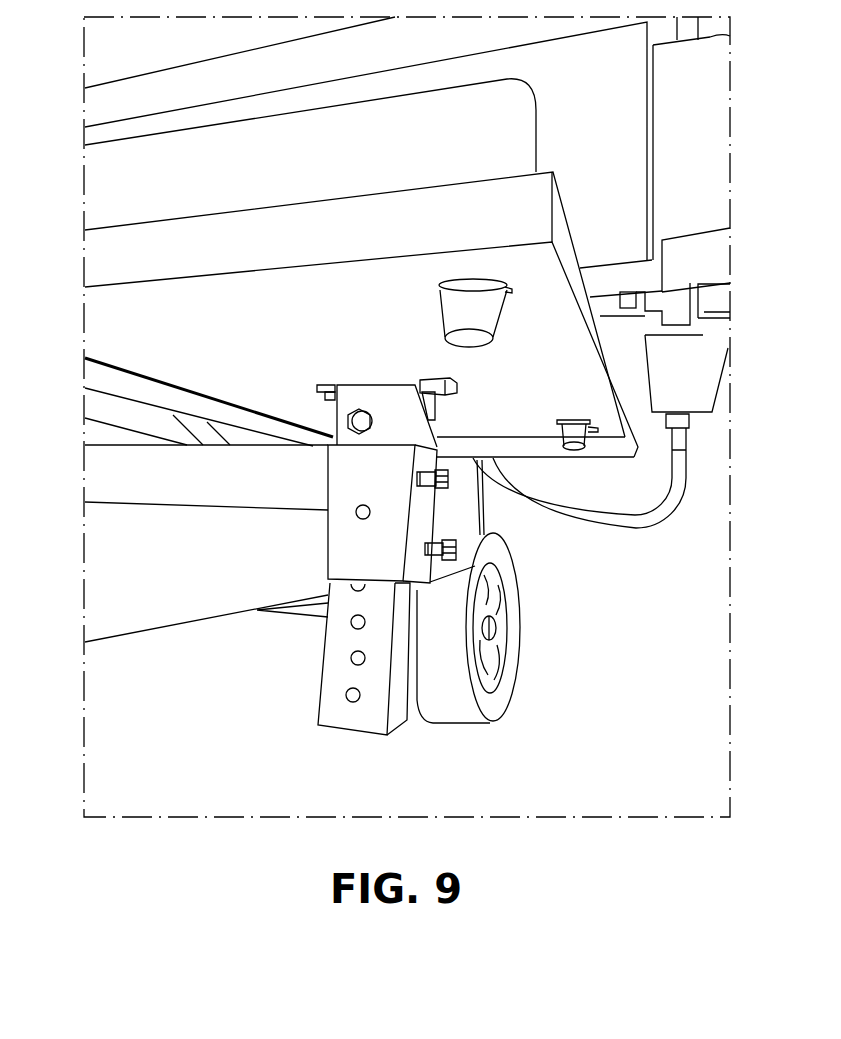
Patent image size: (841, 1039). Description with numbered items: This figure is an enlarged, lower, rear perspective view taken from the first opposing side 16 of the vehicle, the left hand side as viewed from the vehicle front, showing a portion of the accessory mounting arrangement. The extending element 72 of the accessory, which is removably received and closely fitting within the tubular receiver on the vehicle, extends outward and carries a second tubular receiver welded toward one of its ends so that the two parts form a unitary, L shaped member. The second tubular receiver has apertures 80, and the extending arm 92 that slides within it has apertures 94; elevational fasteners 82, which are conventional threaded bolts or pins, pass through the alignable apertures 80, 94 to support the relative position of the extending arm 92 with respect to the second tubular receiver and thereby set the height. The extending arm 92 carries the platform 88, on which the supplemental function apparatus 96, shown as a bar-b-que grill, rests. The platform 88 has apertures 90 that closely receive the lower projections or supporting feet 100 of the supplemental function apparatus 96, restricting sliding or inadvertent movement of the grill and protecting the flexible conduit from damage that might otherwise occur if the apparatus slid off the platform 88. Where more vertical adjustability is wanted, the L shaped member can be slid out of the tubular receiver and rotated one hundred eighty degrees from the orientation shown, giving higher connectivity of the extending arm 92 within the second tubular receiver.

The first opposing side 16 is at (206, 563).
The extending element 72 is at (150, 470).
The apertures 80 is at (360, 516).
The elevational fasteners 82 is at (448, 478).
The platform 88 is at (342, 233).
The apertures 90 is at (507, 288).
The extending arm 92 is at (400, 682).
The apertures 94 is at (355, 698).
The supplemental function apparatus 96 is at (411, 134).
The lower projections or supporting feet 100 is at (492, 340).